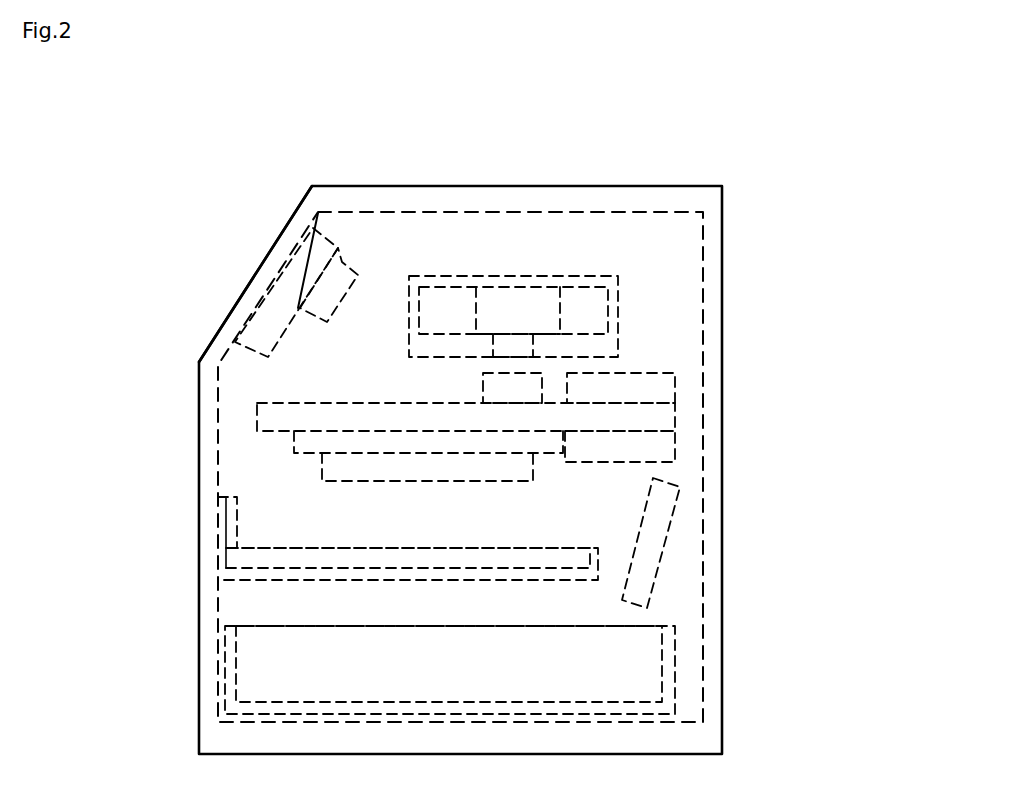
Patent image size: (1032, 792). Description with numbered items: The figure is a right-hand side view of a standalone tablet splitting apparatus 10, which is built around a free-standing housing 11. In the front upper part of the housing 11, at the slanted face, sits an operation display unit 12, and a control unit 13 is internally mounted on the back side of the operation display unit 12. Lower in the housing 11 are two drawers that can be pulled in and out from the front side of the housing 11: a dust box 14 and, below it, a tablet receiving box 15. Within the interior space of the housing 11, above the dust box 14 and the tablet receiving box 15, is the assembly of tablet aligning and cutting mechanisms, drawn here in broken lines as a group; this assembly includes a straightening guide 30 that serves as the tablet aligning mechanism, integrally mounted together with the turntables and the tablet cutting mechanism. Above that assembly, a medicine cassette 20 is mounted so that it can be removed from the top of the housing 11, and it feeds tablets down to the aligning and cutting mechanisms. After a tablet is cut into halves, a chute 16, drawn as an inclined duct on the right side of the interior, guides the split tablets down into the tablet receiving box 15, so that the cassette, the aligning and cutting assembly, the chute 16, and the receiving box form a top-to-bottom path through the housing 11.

The tablet splitting apparatus 10 is at (572, 173).
The housing 11 is at (198, 365).
The operation display unit 12 is at (287, 258).
The control unit 13 is at (348, 271).
The dust box 14 is at (310, 547).
The tablet receiving box 15 is at (288, 677).
The chute 16 is at (658, 567).
The medicine cassette 20 is at (618, 303).
The straightening guide 30 is at (692, 409).